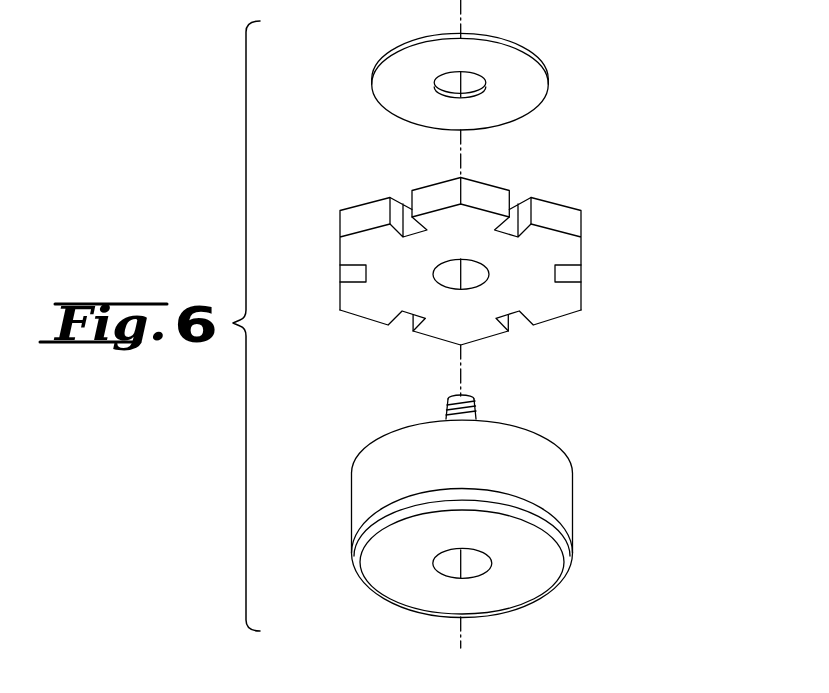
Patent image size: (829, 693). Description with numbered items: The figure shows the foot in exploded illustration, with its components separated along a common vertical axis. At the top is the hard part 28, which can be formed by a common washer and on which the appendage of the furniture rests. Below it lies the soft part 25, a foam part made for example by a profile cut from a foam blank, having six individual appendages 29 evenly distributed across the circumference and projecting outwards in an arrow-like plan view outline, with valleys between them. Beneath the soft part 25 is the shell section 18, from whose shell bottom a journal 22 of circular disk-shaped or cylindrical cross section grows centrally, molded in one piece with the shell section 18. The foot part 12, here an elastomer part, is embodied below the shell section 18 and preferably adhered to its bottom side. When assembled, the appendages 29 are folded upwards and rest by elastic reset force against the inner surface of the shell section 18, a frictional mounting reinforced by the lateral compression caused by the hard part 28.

The soft part 25 is at (629, 153).
The hard part 28 is at (395, 80).
The appendages 29 is at (547, 300).
The journal 22 is at (450, 407).
The shell section 18 is at (581, 492).
The foot part 12 is at (376, 558).